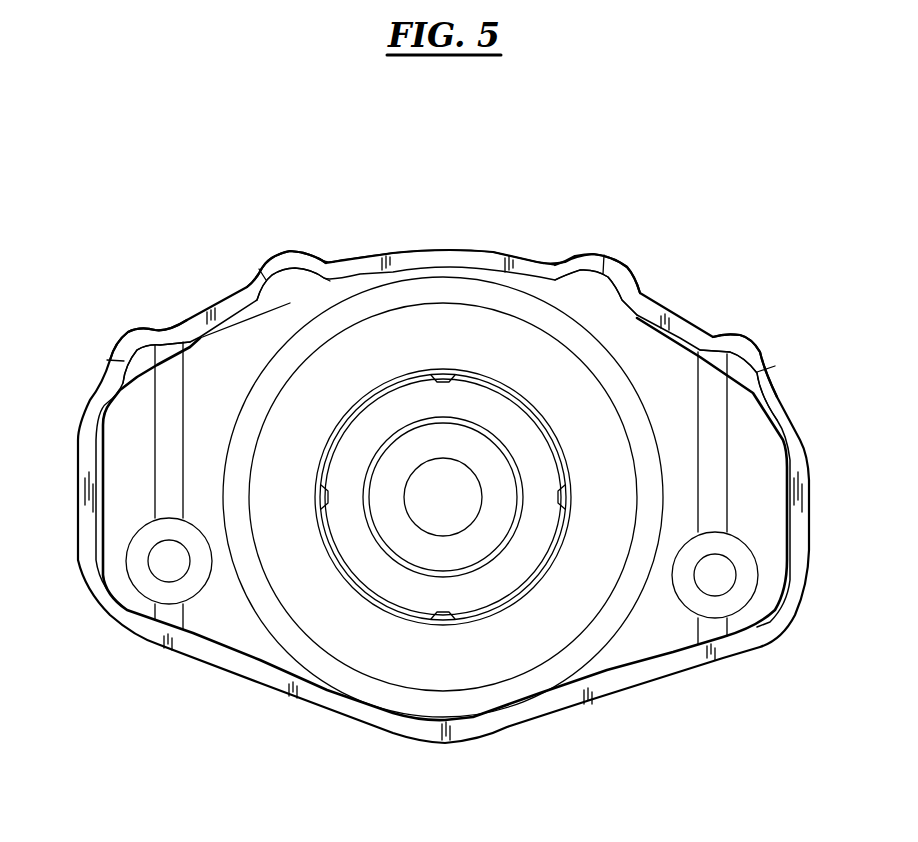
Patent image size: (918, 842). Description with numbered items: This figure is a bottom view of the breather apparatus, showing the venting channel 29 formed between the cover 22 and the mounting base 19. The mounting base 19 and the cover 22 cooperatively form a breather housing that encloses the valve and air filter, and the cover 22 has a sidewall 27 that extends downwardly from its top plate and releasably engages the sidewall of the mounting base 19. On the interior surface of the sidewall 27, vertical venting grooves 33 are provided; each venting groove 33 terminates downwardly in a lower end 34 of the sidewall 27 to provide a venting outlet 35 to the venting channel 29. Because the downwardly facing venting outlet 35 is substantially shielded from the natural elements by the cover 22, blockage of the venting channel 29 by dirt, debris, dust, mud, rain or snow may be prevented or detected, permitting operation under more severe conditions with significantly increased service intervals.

The mounting base 19 is at (653, 625).
The cover 22 is at (801, 417).
The sidewall 27 is at (450, 250).
The venting channel 29 is at (147, 357).
The venting groove 33 is at (107, 360).
The lower end 34 is at (312, 258).
The venting outlet 35 is at (133, 375).